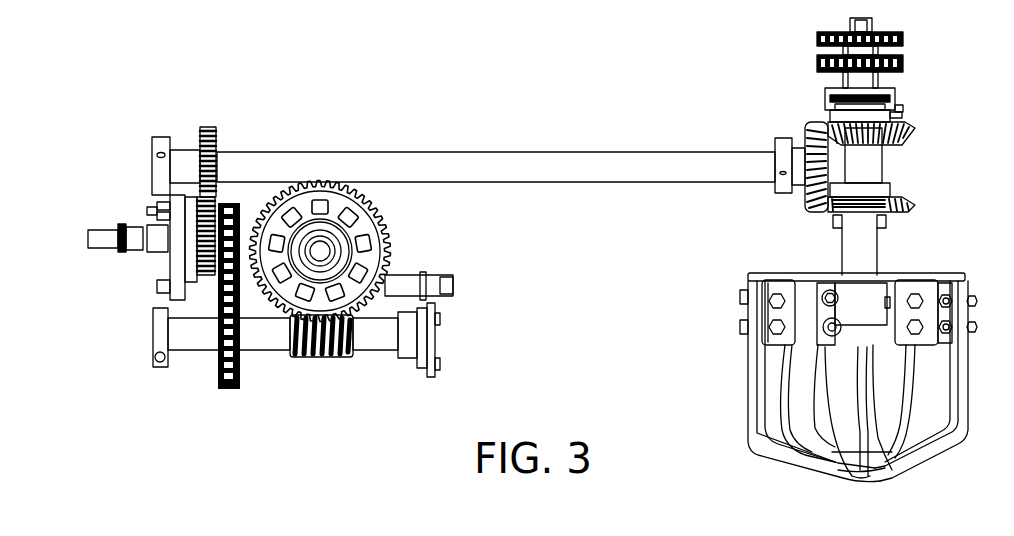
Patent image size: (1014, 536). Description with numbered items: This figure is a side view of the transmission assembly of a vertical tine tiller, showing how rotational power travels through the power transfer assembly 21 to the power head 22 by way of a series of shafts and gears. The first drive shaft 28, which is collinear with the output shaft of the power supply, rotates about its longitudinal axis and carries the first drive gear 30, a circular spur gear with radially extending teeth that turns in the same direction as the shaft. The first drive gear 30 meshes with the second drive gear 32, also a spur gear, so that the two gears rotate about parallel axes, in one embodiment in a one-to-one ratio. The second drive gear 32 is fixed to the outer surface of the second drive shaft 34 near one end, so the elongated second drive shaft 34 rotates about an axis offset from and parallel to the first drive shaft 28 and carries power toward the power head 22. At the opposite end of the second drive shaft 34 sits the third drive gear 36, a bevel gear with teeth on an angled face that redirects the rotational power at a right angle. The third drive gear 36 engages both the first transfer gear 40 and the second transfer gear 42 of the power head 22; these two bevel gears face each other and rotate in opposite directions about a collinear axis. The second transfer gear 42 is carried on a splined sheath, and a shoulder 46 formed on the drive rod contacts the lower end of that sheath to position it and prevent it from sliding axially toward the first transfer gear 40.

The power transfer assembly 21 is at (194, 391).
The power head 22 is at (797, 48).
The first drive shaft 28 is at (103, 234).
The first drive gear 30 is at (207, 275).
The second drive gear 32 is at (208, 126).
The second drive shaft 34 is at (583, 167).
The third drive gear 36 is at (808, 192).
The first transfer gear 40 is at (905, 200).
The second transfer gear 42 is at (905, 133).
The shoulder 46 is at (877, 148).